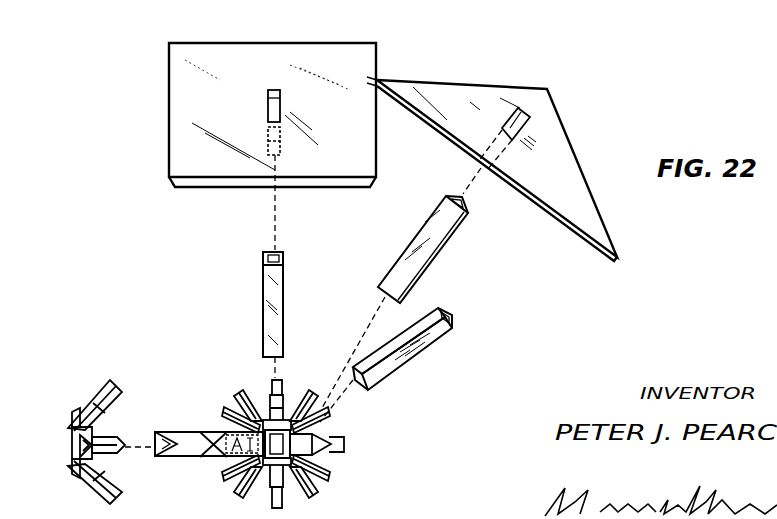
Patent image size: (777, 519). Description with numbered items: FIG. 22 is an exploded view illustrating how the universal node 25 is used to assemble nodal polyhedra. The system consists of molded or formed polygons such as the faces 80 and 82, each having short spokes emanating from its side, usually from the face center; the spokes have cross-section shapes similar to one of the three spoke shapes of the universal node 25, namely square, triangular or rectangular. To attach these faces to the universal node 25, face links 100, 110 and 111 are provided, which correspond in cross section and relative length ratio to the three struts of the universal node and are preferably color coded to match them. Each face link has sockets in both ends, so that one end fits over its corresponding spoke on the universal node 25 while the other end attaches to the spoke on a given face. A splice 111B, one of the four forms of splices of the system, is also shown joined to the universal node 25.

The molded polygon face 80 is at (337, 51).
The molded polygon face 82 is at (511, 90).
The face link 100 is at (285, 303).
The face link 110 is at (404, 368).
The face link 111 is at (428, 268).
The splice 111B is at (204, 461).
The universal node 25 is at (131, 403).